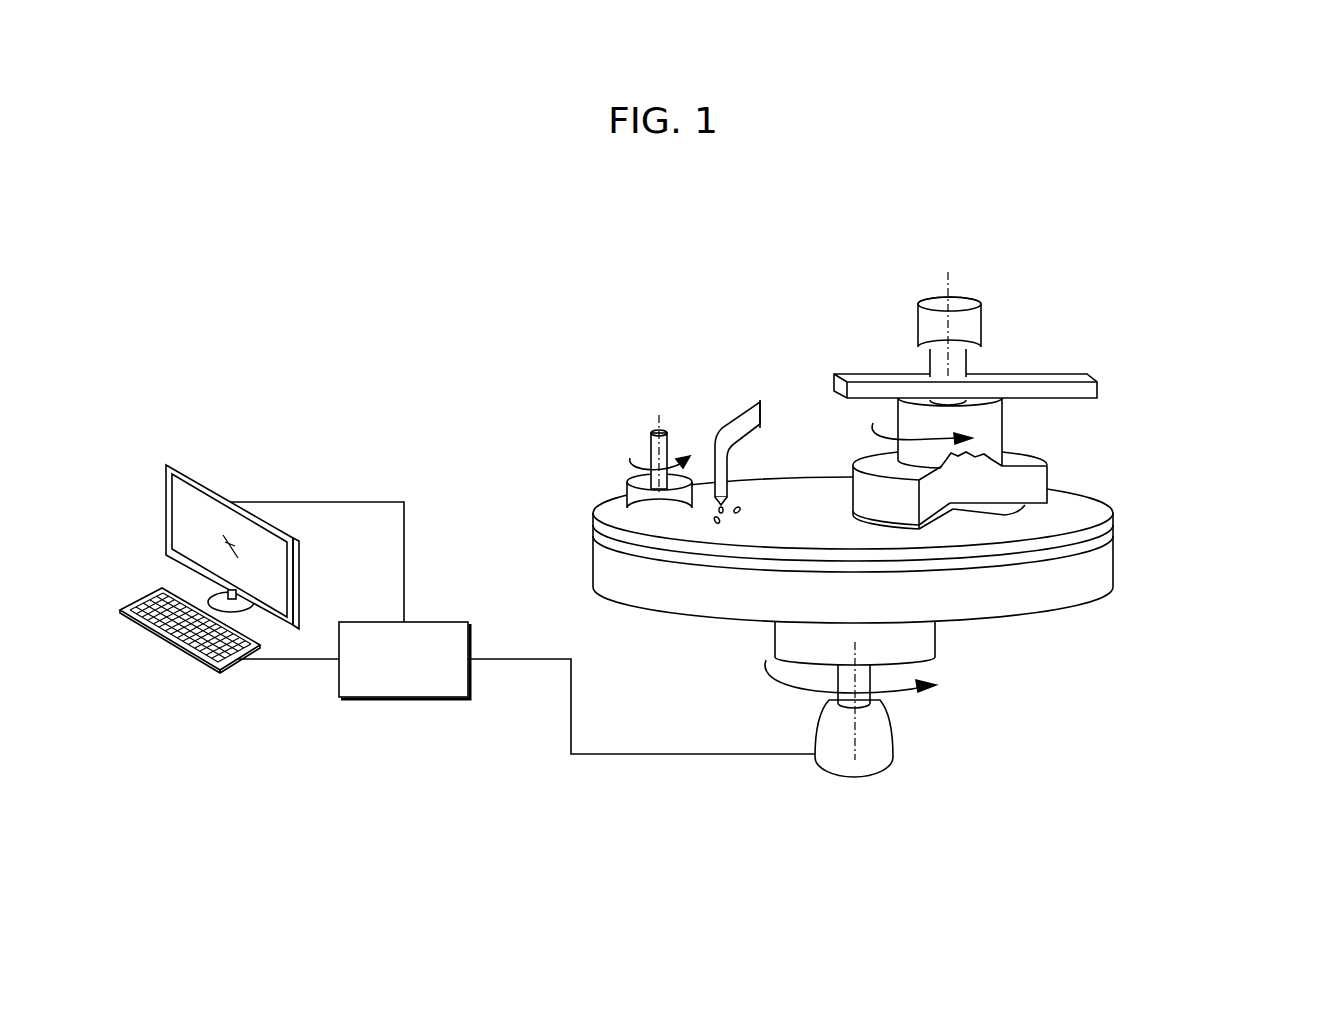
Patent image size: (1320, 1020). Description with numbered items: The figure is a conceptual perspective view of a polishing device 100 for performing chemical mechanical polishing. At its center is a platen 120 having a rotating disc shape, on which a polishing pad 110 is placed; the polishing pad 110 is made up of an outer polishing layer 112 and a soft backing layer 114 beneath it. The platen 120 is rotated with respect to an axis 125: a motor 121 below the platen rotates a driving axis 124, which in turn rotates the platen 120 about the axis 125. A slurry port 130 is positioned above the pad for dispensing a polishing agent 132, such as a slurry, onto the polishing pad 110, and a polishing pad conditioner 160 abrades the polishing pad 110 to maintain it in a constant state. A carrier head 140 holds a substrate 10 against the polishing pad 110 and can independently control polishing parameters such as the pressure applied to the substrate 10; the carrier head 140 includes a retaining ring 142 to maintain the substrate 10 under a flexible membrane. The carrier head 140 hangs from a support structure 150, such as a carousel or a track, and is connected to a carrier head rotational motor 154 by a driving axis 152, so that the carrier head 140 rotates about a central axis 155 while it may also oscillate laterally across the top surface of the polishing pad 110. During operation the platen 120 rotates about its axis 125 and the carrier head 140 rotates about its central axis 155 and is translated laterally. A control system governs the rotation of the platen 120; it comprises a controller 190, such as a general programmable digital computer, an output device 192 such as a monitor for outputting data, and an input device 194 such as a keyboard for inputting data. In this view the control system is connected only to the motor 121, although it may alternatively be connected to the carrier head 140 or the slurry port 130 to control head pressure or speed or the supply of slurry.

The polishing device 100 is at (1194, 192).
The substrate 10 is at (1111, 511).
The polishing pad 110 is at (935, 554).
The outer polishing layer 112 is at (1109, 527).
The soft backing layer 114 is at (1101, 543).
The platen 120 is at (1103, 571).
The motor 121 is at (834, 746).
The driving axis 124 is at (784, 634).
The axis 125 is at (870, 739).
The slurry port 130 is at (735, 430).
The polishing agent 132 is at (716, 523).
The carrier head 140 is at (1016, 382).
The retaining ring 142 is at (1050, 487).
The support structure 150 is at (1058, 378).
The driving axis 152 is at (936, 366).
The carrier head rotational motor 154 is at (968, 320).
The central axis 155 is at (951, 280).
The polishing pad conditioner 160 is at (634, 499).
The controller 190 is at (430, 621).
The output device 192 is at (220, 492).
The input device 194 is at (170, 643).